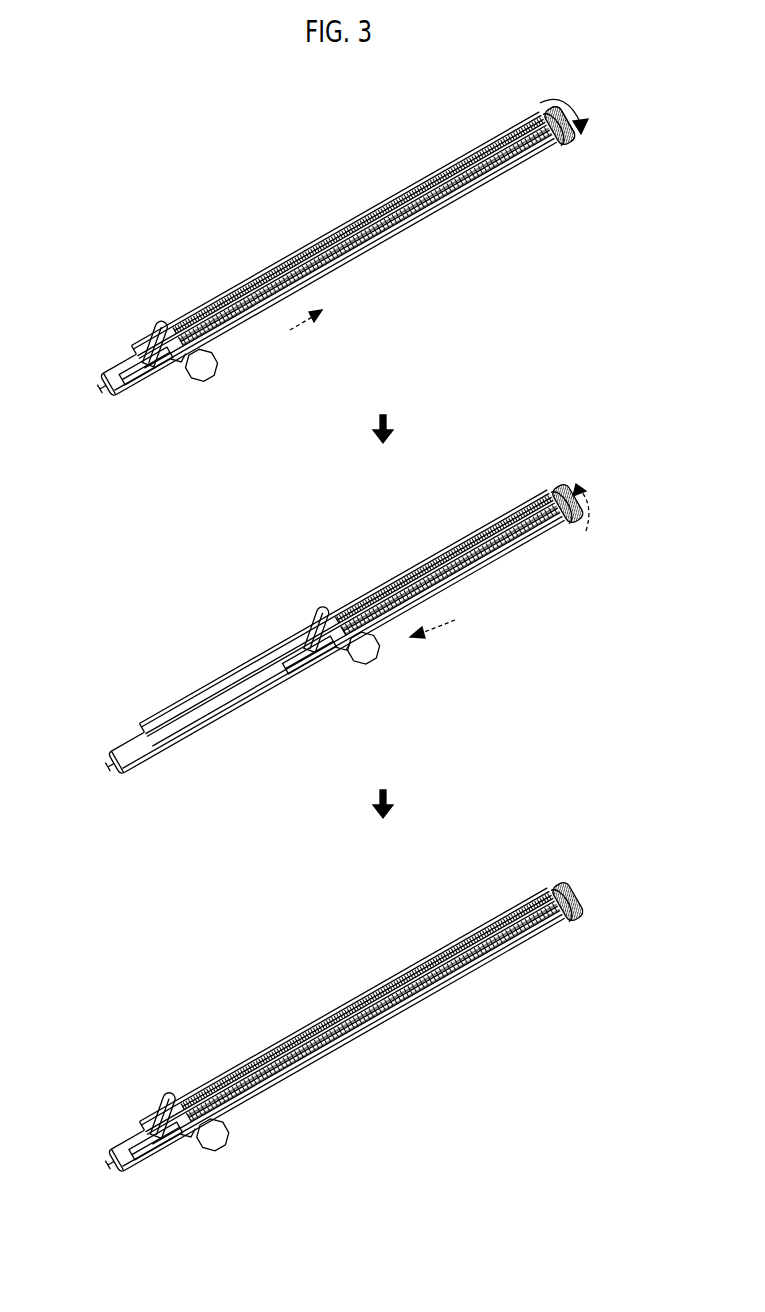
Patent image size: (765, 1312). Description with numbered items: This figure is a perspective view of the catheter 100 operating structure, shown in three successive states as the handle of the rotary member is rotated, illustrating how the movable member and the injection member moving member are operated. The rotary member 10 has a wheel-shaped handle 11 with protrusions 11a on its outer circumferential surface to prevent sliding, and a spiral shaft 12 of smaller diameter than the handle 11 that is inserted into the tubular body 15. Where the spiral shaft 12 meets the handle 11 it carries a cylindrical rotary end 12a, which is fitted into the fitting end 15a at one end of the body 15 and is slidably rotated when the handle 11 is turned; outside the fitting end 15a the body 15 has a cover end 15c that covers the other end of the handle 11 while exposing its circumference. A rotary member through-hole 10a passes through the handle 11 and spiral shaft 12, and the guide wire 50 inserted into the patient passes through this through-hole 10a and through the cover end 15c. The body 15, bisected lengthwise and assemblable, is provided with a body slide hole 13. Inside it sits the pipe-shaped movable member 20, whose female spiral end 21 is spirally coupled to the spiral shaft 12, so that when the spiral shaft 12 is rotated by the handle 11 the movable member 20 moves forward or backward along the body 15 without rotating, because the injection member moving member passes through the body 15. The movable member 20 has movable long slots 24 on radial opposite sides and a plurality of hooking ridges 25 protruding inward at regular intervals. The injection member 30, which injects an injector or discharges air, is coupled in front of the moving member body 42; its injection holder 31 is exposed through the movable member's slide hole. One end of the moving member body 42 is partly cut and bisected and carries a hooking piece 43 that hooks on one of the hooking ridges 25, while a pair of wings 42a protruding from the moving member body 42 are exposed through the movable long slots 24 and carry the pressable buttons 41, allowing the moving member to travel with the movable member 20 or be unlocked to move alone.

The catheter 100 is at (339, 258).
The rotary member 10 is at (339, 241).
The rotary member through-hole 10a is at (355, 268).
The handle 11 is at (562, 160).
The protrusions 11a is at (578, 150).
The spiral shaft 12 is at (468, 202).
The cylindrical rotary end 12a is at (545, 168).
The body slide hole 13 is at (285, 283).
The body 15 is at (372, 216).
The fitting end 15a is at (525, 131).
The cover end 15c is at (541, 108).
The movable member 20 is at (328, 290).
The female spiral end 21 is at (370, 256).
The movable long slots 24 is at (222, 305).
The hooking ridges 25 is at (250, 330).
The injection member 30 is at (140, 359).
The injection holder 31 is at (158, 332).
The pressable buttons 41 is at (215, 372).
The moving member body 42 is at (172, 378).
The wings 42a is at (190, 375).
The hooking piece 43 is at (224, 352).
The guide wire 50 is at (108, 395).